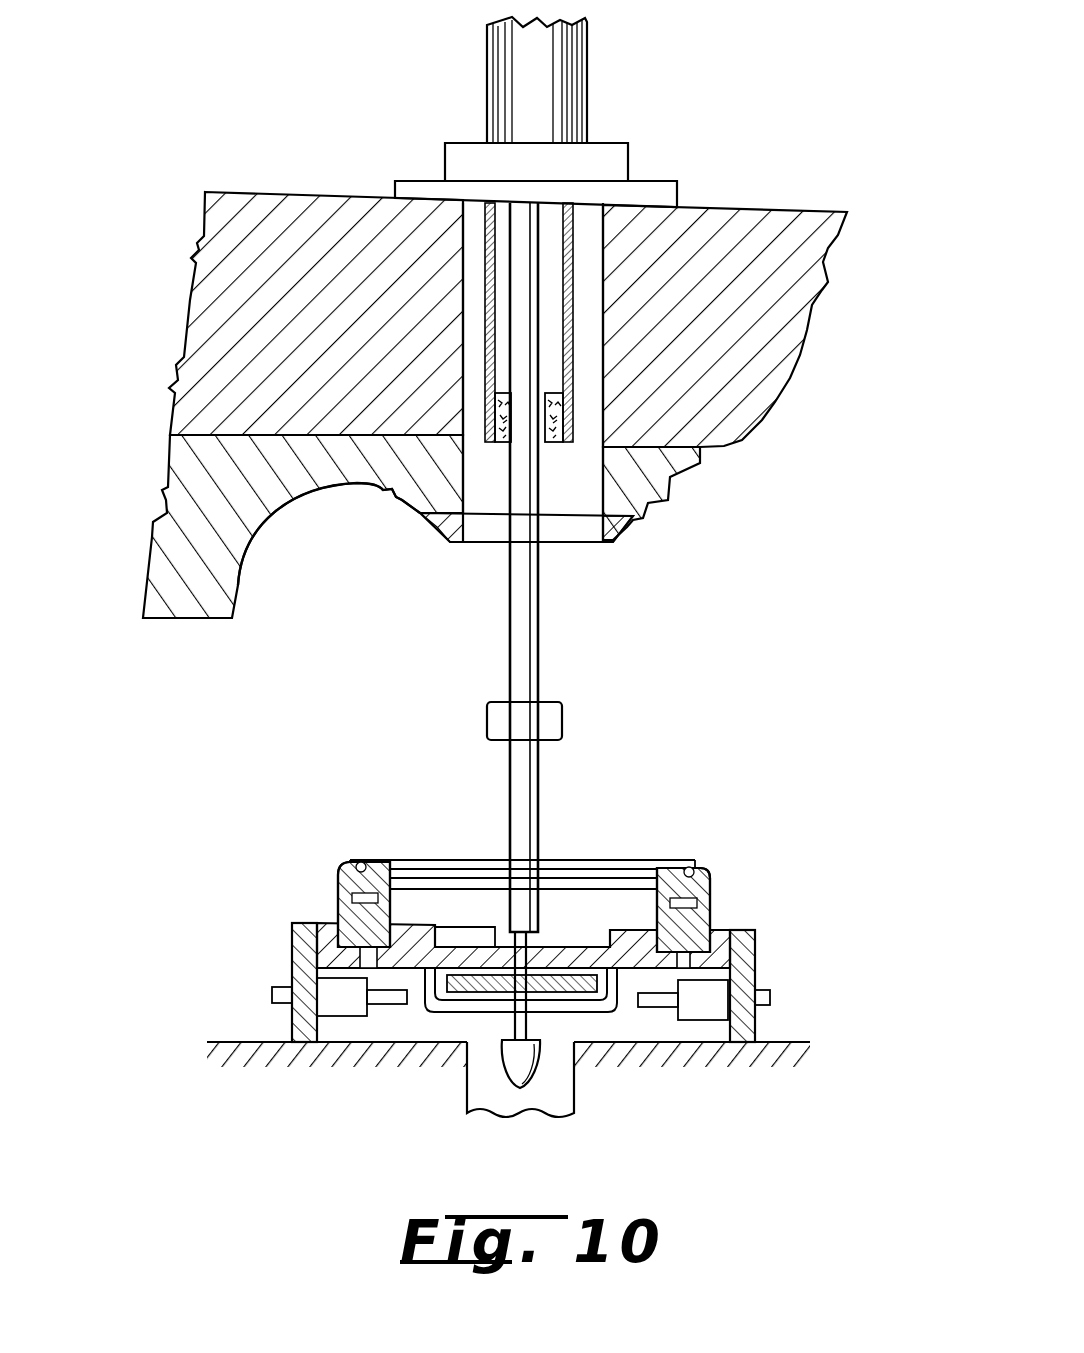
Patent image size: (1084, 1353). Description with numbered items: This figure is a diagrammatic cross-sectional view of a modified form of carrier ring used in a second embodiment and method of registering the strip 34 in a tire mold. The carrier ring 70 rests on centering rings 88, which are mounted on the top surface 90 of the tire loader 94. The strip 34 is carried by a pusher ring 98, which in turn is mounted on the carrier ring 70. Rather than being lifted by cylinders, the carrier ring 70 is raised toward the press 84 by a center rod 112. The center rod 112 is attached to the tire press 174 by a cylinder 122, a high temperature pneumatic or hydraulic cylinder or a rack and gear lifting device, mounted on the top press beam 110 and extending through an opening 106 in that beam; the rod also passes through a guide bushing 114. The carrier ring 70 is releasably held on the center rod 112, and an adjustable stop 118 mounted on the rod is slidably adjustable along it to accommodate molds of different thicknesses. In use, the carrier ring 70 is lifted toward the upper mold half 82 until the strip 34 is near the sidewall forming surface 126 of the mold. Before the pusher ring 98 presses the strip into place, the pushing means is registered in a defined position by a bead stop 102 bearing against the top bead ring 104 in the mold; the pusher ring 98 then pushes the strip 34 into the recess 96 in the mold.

The cylinder 122 is at (583, 67).
The tire press 174 is at (822, 118).
The opening 106 is at (607, 236).
The press 84 is at (815, 252).
The top press beam 110 is at (737, 295).
The guide bushing 114 is at (487, 390).
The upper mold half 82 is at (192, 487).
The recess 96 is at (378, 487).
The sidewall forming surface 126 is at (377, 522).
The top bead ring 104 is at (440, 536).
The center rod 112 is at (545, 637).
The adjustable stop 118 is at (565, 718).
The strip 34 is at (367, 862).
The bead stop 102 is at (495, 960).
The pusher ring 98 is at (338, 890).
The carrier ring 70 is at (738, 935).
The centering rings 88 is at (753, 997).
The top surface 90 is at (240, 1042).
The tire loader 94 is at (402, 1112).